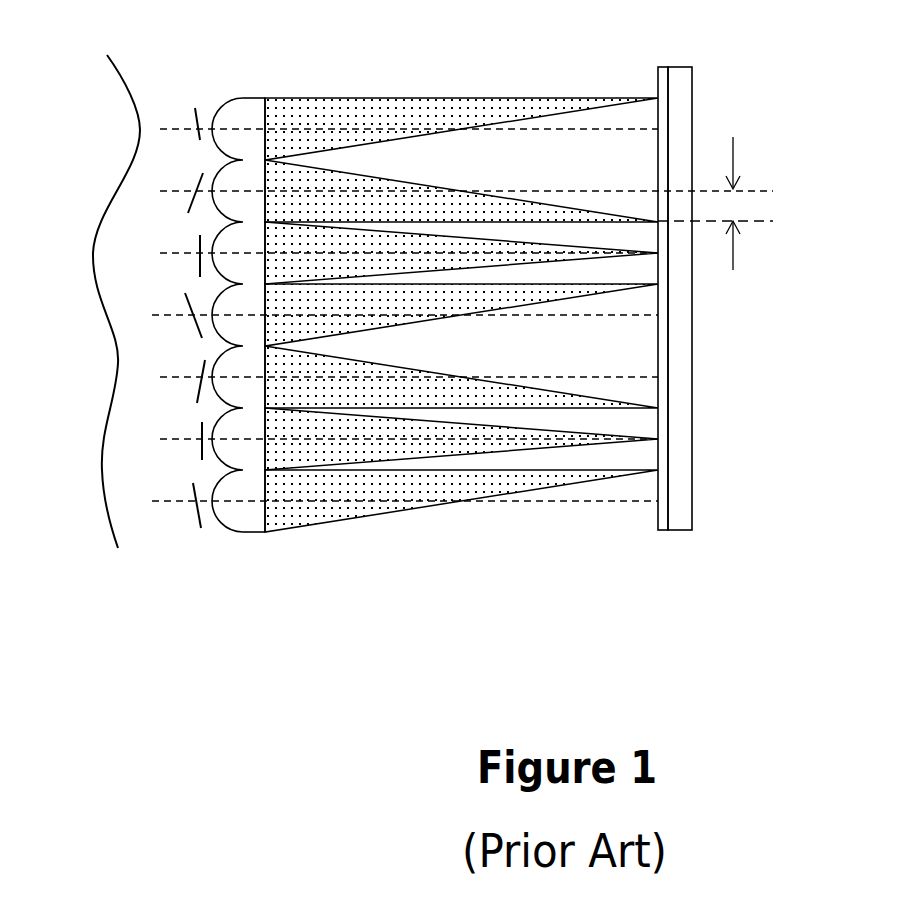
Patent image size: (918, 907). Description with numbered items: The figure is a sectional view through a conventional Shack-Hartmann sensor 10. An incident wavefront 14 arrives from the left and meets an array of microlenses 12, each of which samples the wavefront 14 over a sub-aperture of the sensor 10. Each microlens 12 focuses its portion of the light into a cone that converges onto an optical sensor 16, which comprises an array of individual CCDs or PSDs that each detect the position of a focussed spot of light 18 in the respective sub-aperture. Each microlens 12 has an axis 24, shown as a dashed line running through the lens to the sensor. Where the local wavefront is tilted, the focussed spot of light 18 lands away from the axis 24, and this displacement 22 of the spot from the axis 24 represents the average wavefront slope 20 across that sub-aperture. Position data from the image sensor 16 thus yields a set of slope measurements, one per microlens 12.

The Shack-Hartmann sensor 10 is at (320, 642).
The microlens 12 is at (213, 130).
The incident wavefront 14 is at (105, 484).
The optical sensor 16 is at (665, 532).
The focussed spot of light 18 is at (658, 97).
The average wavefront slope 20 is at (197, 118).
The displacement 22 is at (755, 205).
The axis 24 is at (643, 126).